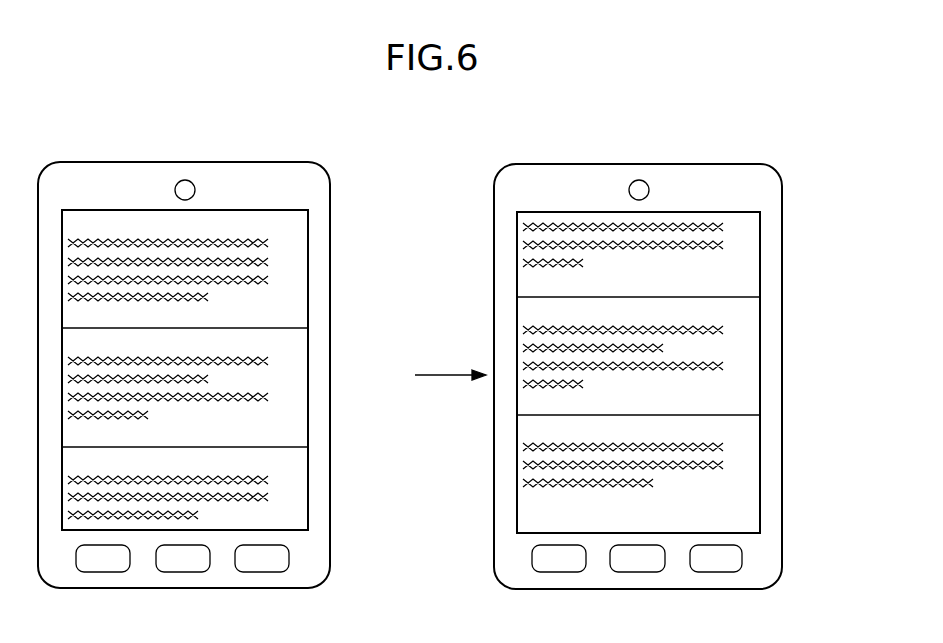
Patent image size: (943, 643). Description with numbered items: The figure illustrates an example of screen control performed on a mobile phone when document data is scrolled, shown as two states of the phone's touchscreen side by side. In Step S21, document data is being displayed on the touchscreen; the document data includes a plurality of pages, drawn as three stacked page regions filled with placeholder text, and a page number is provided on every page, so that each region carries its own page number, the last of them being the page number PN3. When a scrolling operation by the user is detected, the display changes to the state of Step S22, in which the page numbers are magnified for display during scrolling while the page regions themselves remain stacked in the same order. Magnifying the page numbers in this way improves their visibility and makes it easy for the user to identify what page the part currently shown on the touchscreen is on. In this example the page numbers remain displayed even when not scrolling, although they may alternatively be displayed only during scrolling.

The page number PN3 is at (692, 512).
The step S21 is at (104, 140).
The step S22 is at (560, 140).